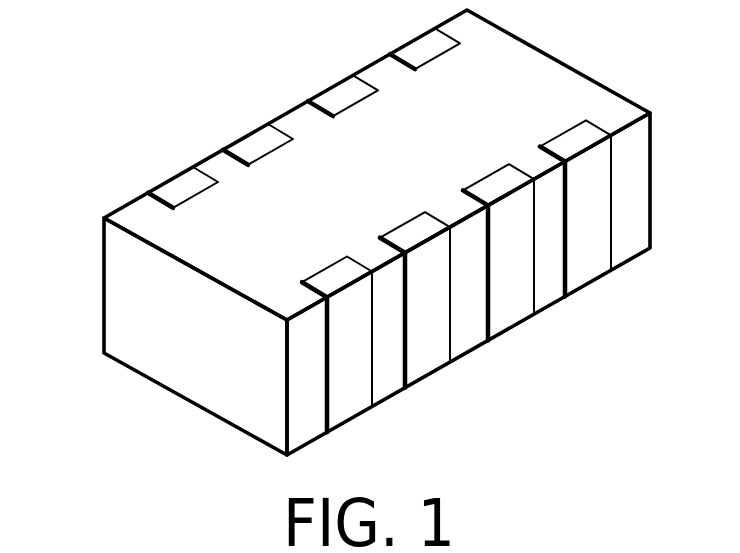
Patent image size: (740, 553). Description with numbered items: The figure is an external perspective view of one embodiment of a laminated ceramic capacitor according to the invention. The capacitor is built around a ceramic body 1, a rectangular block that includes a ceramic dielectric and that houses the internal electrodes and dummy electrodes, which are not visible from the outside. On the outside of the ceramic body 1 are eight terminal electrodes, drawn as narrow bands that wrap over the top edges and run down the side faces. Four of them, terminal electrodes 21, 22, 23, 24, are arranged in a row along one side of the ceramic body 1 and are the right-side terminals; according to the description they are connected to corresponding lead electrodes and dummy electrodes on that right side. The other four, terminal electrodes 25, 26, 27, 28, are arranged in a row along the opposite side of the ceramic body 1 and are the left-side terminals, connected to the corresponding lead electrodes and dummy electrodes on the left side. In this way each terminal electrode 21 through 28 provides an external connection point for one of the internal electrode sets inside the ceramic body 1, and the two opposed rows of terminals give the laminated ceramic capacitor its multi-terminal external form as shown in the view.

The ceramic body 1 is at (117, 262).
The terminal electrode 21 is at (585, 272).
The terminal electrode 22 is at (507, 319).
The terminal electrode 23 is at (423, 364).
The terminal electrode 24 is at (345, 409).
The terminal electrode 25 is at (175, 186).
The terminal electrode 26 is at (258, 140).
The terminal electrode 27 is at (343, 93).
The terminal electrode 28 is at (423, 48).